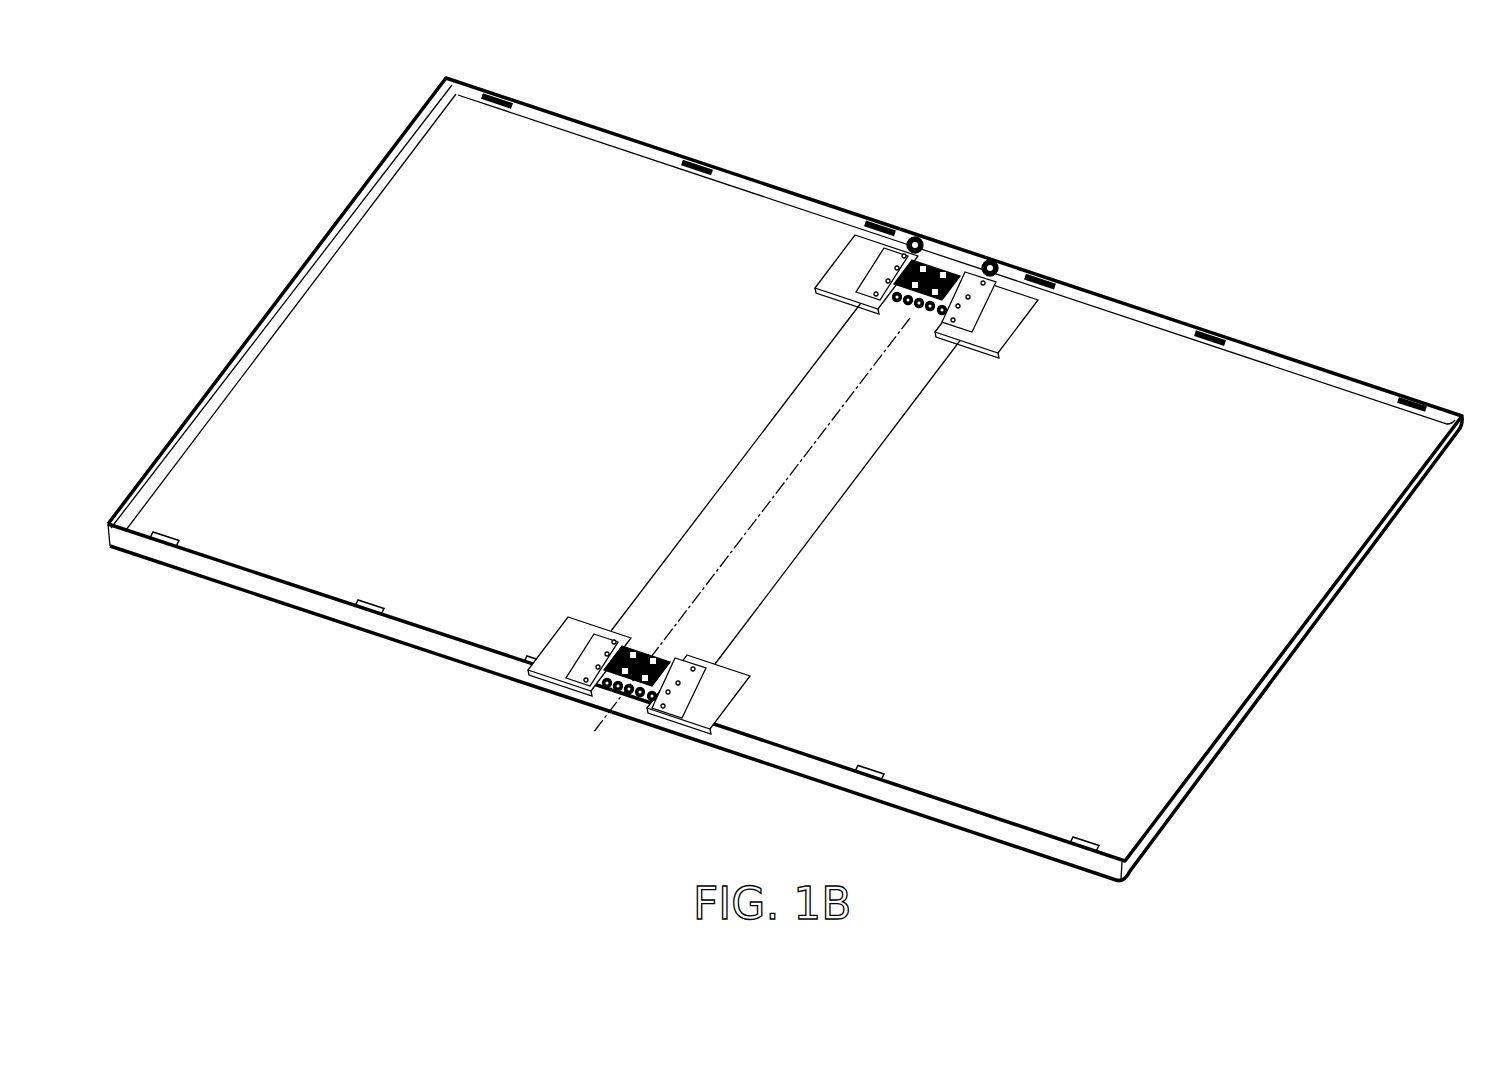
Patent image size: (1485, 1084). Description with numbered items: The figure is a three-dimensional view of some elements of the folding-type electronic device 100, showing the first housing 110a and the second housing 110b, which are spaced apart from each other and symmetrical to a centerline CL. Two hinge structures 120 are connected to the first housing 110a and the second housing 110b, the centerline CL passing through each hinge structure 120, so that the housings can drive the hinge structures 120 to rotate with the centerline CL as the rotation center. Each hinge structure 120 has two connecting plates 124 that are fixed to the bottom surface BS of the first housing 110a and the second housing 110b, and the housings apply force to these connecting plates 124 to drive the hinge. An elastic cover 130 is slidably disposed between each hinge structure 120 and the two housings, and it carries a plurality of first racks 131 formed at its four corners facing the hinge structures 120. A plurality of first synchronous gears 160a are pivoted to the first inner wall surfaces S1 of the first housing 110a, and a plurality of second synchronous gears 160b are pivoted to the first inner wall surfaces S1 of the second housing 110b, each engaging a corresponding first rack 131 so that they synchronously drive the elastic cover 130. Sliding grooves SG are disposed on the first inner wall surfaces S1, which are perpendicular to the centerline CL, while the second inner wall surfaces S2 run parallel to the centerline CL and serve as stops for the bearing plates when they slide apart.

The folding-type electronic device 100 is at (1441, 893).
The first housing 110a is at (485, 659).
The second housing 110b is at (727, 750).
The hinge structure 120 is at (948, 262).
The connecting plate 124 is at (826, 270).
The elastic cover 130 is at (828, 456).
The first rack 131 is at (1003, 283).
The first synchronous gear 160a is at (914, 236).
The second synchronous gear 160b is at (995, 262).
The first inner wall surface S1 is at (783, 204).
The second inner wall surface S2 is at (292, 301).
The sliding groove SG is at (694, 163).
The centerline CL is at (737, 548).
The bottom surface BS is at (1178, 730).